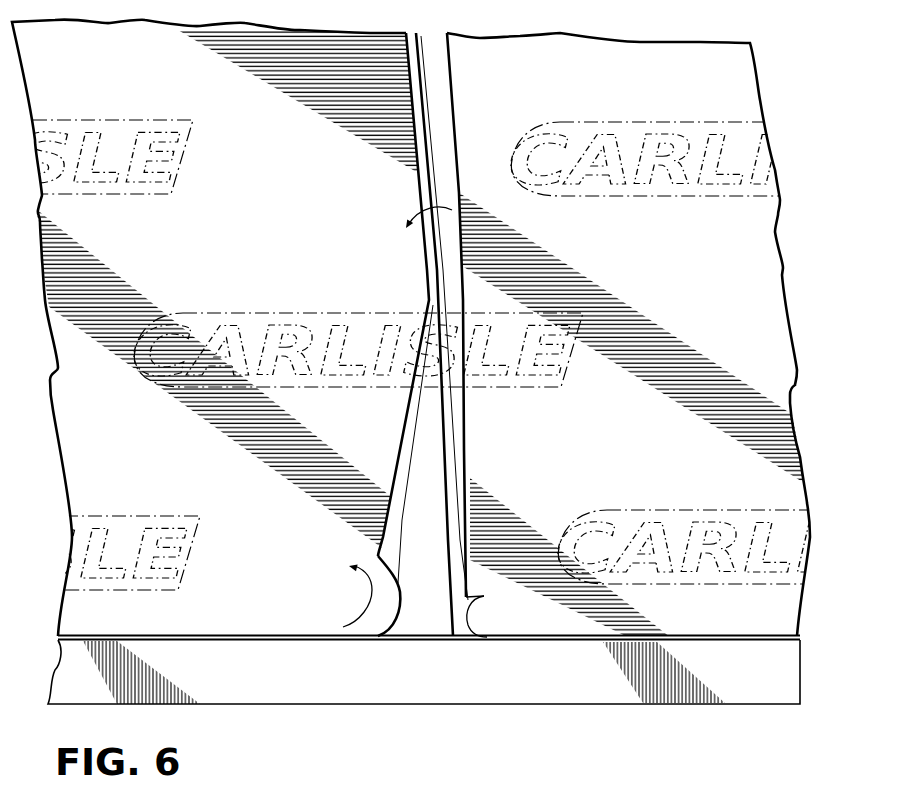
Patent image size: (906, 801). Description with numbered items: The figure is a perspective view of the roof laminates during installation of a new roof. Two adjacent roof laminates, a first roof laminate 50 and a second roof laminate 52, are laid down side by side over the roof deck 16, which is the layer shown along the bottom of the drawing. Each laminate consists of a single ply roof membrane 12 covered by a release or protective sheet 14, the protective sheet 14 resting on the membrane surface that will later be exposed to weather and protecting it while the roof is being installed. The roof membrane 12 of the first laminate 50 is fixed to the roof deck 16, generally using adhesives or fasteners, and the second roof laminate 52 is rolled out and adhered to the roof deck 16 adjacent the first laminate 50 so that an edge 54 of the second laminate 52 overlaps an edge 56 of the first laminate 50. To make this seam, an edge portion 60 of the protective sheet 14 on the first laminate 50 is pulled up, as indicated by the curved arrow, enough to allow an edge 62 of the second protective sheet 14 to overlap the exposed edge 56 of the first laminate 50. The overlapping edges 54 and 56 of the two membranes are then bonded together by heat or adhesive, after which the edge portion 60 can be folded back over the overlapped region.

The roof membrane 12 is at (456, 84).
The protective sheet 14 is at (397, 413).
The roof deck 16 is at (259, 672).
The first roof laminate 50 is at (299, 243).
The second roof laminate 52 is at (677, 262).
The edge of second laminate 54 is at (487, 638).
The edge of first laminate 56 is at (423, 610).
The edge portion of protective sheet 60 is at (380, 557).
The edge of second protective sheet 62 is at (477, 458).